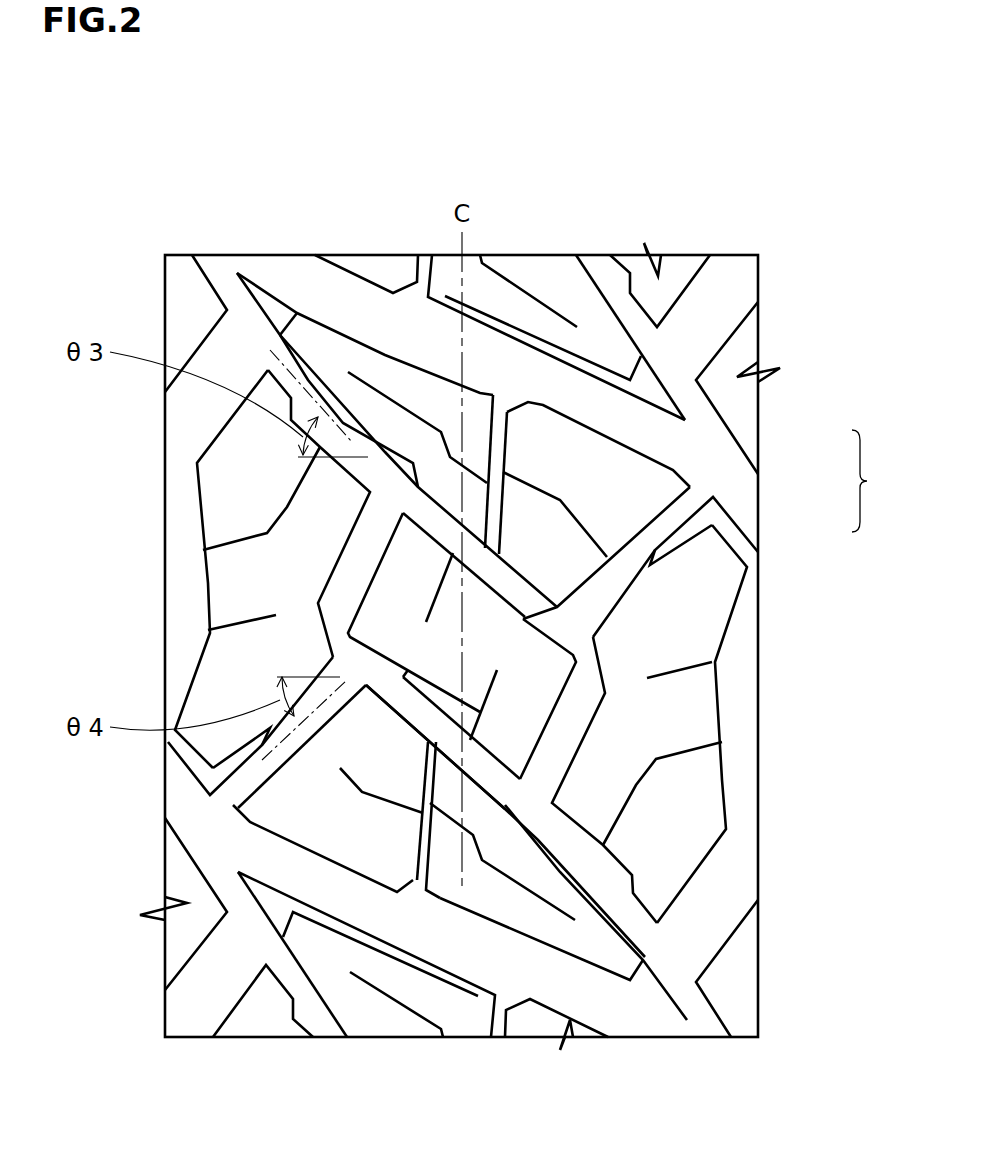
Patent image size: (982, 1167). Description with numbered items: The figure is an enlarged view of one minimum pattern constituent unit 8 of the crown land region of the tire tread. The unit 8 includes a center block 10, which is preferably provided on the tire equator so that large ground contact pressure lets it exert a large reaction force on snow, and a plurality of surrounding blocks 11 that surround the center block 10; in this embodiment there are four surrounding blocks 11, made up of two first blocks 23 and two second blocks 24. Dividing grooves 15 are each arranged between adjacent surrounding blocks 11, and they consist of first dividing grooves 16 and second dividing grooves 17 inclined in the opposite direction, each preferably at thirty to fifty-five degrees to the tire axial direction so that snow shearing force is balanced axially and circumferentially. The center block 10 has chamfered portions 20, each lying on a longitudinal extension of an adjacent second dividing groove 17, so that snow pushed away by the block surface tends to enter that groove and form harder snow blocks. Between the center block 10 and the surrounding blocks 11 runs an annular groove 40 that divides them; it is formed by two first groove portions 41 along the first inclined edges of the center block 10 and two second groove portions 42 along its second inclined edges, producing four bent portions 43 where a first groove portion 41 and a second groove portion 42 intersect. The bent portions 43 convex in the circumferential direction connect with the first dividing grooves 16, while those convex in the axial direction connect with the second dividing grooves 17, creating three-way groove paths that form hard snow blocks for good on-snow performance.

The minimum pattern constituent unit 8 is at (545, 443).
The center block 10 is at (480, 650).
The surrounding blocks 11 is at (877, 481).
The dividing grooves 15 is at (343, 425).
The first dividing grooves 16 is at (583, 861).
The second dividing grooves 17 is at (632, 573).
The chamfered portions 20 is at (361, 641).
The first block 23 is at (258, 566).
The second block 24 is at (573, 475).
The annular groove 40 is at (488, 771).
The first groove portions 41 is at (333, 433).
The second groove portions 42 is at (452, 540).
The bent portions 43 is at (393, 492).